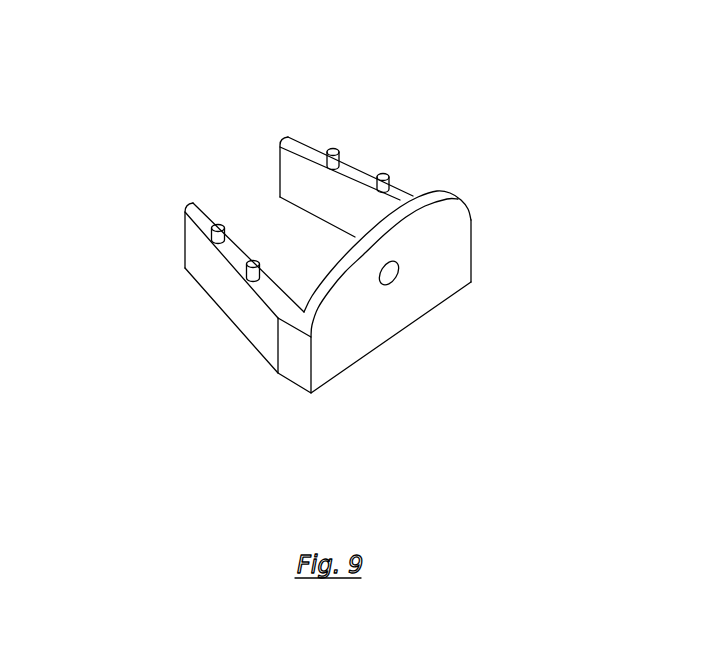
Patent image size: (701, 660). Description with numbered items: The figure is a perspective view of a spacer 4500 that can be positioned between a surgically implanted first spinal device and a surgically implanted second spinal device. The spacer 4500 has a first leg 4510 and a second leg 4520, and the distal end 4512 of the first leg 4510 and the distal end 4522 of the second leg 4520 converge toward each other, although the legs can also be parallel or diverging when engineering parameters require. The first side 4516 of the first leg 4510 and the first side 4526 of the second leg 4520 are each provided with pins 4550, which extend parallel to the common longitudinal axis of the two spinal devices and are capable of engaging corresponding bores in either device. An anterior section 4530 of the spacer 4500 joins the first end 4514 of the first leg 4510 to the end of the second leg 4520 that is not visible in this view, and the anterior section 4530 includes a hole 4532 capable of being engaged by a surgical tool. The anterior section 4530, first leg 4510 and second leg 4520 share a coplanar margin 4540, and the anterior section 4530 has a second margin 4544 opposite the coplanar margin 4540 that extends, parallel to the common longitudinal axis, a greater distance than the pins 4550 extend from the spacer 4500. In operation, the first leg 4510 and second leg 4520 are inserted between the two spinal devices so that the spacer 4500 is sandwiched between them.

The spacer 4500 is at (324, 247).
The first leg 4510 is at (165, 308).
The distal end of first leg 4512 is at (106, 235).
The first end of first leg 4514 is at (229, 366).
The first side of first leg 4516 is at (180, 292).
The second leg 4520 is at (310, 129).
The distal end of second leg 4522 is at (205, 109).
The first side of second leg 4526 is at (346, 120).
The anterior section 4530 is at (440, 332).
The hole 4532 is at (461, 318).
The coplanar margin 4540 is at (417, 378).
The second margin 4544 is at (467, 264).
The pins 4550 is at (359, 215).